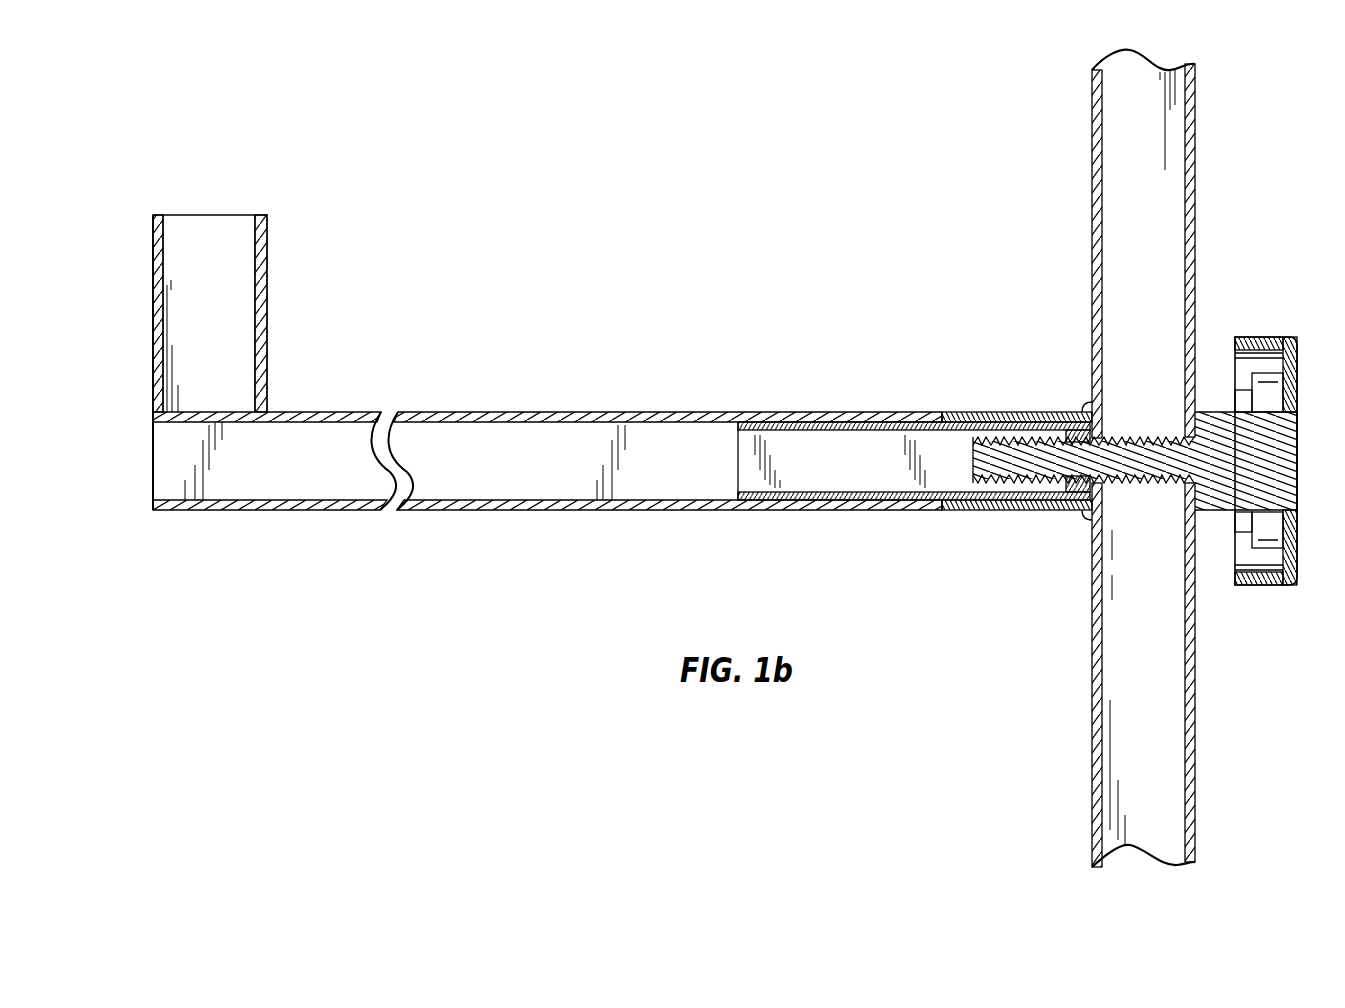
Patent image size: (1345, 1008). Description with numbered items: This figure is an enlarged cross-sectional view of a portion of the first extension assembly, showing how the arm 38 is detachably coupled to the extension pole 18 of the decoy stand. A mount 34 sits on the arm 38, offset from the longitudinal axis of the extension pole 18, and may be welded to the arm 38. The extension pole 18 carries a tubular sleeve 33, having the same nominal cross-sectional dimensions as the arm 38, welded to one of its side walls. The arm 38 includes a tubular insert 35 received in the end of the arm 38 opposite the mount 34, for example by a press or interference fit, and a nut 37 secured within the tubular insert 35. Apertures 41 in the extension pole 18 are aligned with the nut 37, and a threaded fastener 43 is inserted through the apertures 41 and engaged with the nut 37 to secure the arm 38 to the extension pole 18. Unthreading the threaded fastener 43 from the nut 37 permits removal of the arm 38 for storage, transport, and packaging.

The extension pole 18 is at (1195, 238).
The tubular sleeve 33 is at (1008, 512).
The mount 34 is at (267, 289).
The tubular insert 35 is at (802, 490).
The nut 37 is at (1063, 433).
The arm 38 is at (548, 412).
The apertures 41 is at (1190, 481).
The threaded fastener 43 is at (1137, 437).